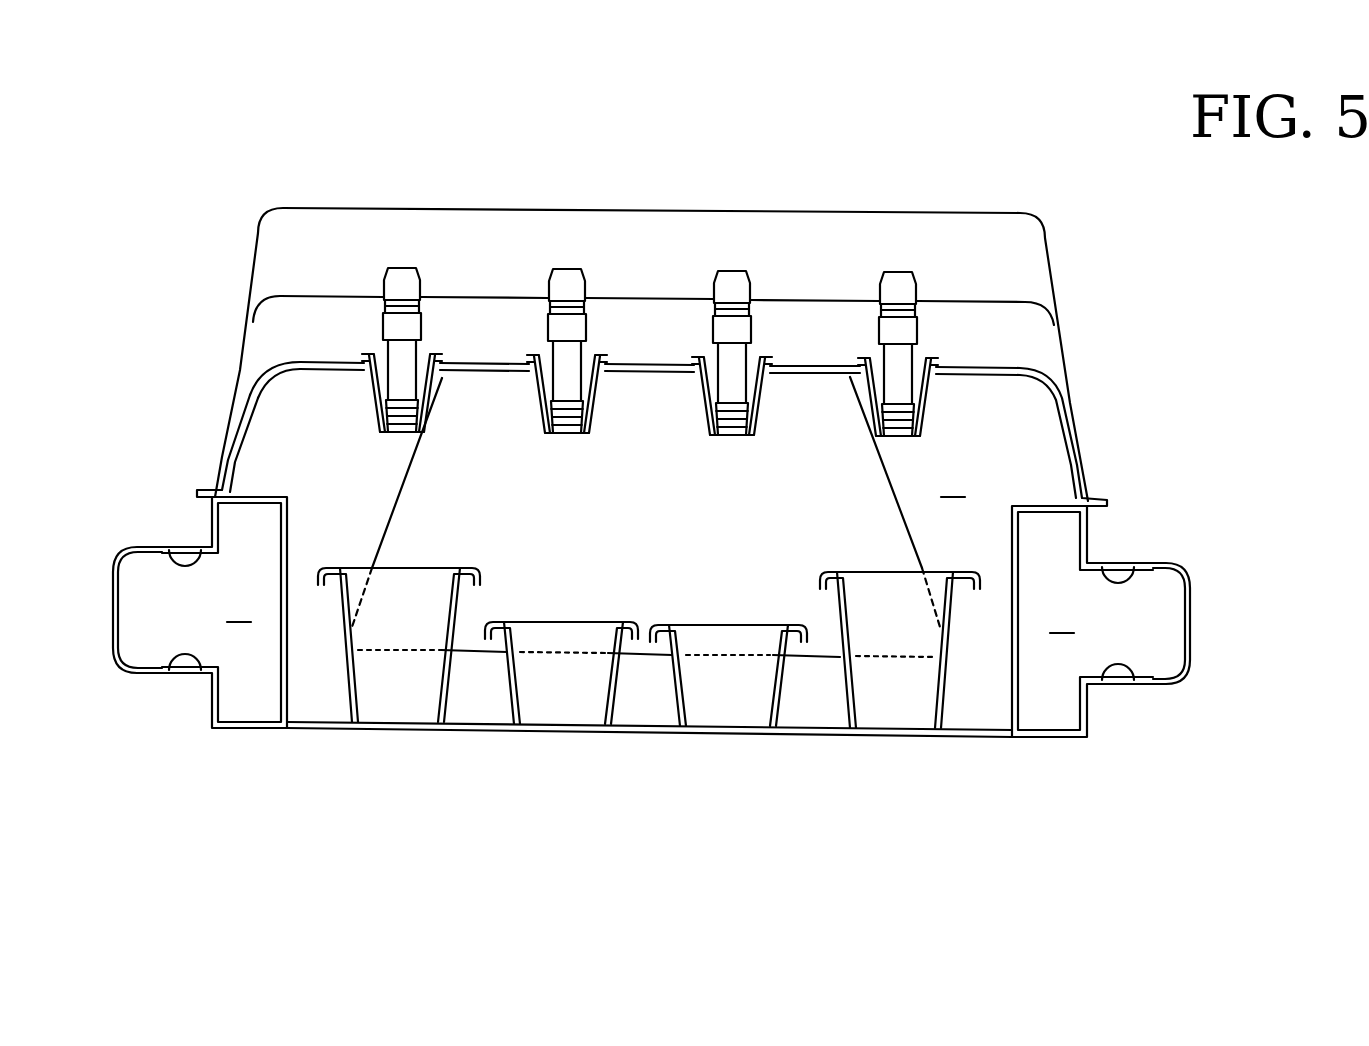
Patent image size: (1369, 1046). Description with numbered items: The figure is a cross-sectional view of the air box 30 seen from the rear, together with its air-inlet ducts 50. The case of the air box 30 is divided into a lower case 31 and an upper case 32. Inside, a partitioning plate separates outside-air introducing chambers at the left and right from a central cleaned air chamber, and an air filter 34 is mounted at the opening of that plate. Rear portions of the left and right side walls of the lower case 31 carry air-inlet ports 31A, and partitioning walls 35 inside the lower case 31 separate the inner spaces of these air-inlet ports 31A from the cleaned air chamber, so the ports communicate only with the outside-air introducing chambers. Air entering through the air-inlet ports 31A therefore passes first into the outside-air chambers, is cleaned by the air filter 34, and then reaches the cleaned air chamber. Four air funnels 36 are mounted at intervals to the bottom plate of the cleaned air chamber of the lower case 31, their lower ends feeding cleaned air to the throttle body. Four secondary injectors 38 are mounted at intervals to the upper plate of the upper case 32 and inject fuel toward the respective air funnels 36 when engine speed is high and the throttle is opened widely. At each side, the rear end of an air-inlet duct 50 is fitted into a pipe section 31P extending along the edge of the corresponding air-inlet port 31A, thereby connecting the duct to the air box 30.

The air box 30 is at (1005, 200).
The lower case 31 is at (212, 527).
The air-inlet ports 31A is at (210, 566).
The pipe sections 31P is at (158, 673).
The upper case 32 is at (232, 410).
The air filter 34 is at (890, 467).
The partitioning walls 35 is at (287, 643).
The air funnels 36 is at (443, 695).
The secondary injectors 38 is at (420, 330).
The air-inlet ducts 50 is at (116, 592).